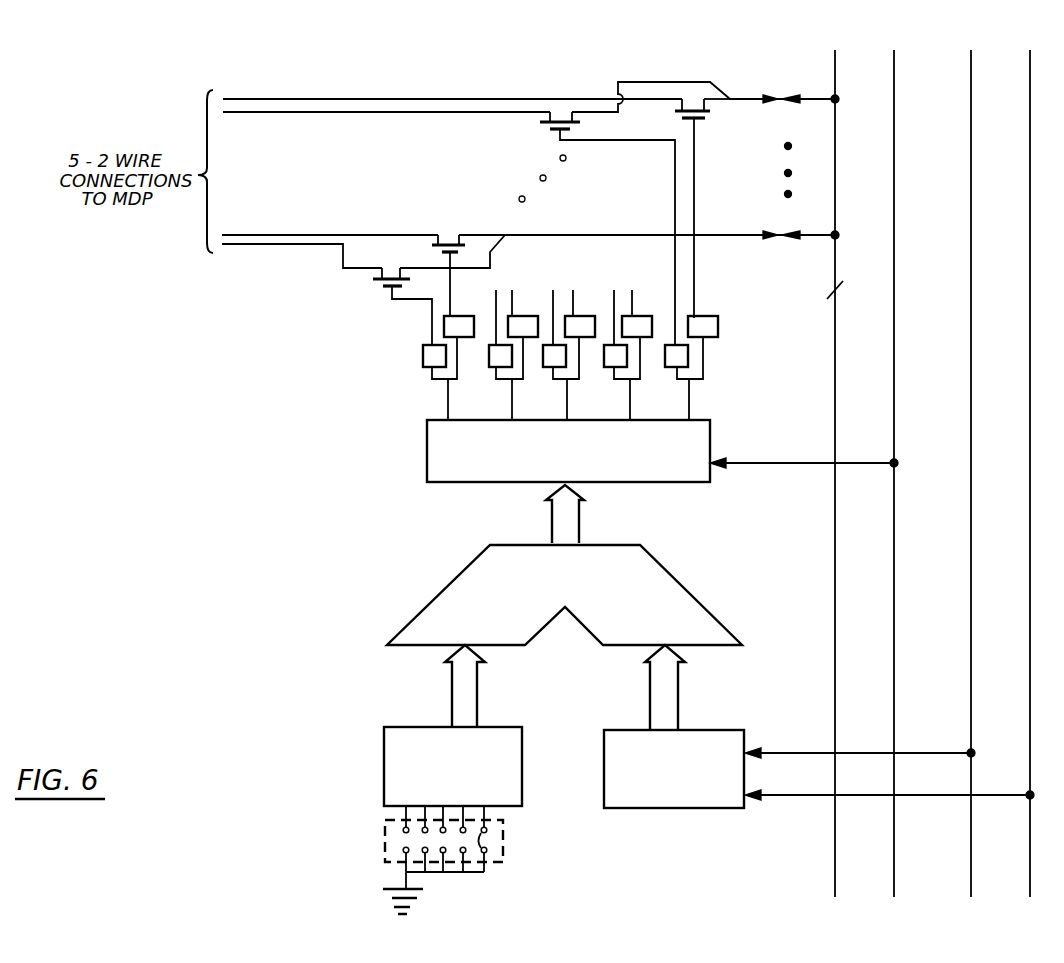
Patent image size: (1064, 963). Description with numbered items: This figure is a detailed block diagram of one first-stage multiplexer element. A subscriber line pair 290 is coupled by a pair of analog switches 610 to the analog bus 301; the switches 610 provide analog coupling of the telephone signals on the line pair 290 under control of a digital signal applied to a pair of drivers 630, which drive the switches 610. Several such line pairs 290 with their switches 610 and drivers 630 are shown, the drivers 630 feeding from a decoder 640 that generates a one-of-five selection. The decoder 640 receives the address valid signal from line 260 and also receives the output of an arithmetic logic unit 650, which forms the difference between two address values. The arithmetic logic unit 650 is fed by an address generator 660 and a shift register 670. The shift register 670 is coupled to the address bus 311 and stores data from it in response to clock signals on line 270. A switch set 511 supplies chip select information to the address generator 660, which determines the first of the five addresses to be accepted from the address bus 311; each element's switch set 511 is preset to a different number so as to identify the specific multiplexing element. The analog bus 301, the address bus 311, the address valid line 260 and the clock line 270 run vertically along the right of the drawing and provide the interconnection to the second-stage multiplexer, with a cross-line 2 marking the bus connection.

The bus 2 is at (827, 286).
The subscriber line pair 290 is at (304, 90).
The analog switches 610 is at (565, 110).
The drivers 630 is at (486, 312).
The decoder 640 is at (480, 487).
The arithmetic logic unit 650 is at (460, 577).
The address generator 660 is at (384, 745).
The shift register 670 is at (604, 730).
The switch set 511 is at (385, 842).
The analog bus 301 is at (818, 94).
The address valid signal line 260 is at (880, 99).
The address bus 311 is at (958, 96).
The clock signal line 270 is at (1016, 109).